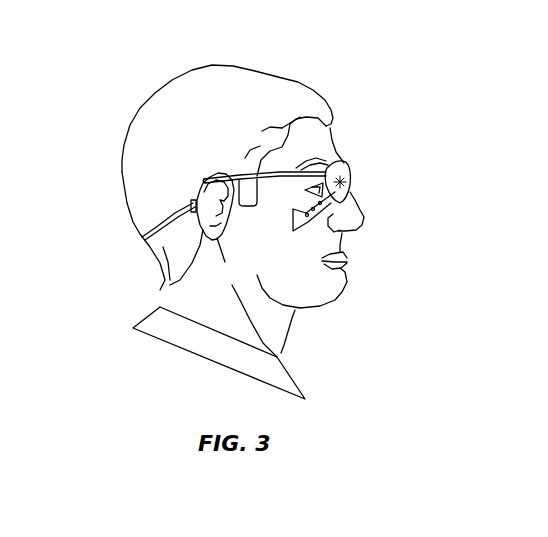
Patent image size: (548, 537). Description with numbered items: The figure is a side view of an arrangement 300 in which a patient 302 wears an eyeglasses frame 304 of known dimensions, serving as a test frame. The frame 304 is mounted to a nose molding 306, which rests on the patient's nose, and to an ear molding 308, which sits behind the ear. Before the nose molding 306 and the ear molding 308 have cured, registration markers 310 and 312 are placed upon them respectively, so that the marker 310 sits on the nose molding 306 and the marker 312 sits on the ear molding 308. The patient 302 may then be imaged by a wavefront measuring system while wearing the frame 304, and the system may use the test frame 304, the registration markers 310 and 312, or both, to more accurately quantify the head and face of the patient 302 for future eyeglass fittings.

The head-mounted display system 300 is at (306, 43).
The patient 302 is at (165, 110).
The eyeglasses frame 304 is at (353, 173).
The nose molding 306 is at (363, 217).
The ear molding 308 is at (174, 184).
The registration marker 310 is at (296, 226).
The registration marker 312 is at (129, 236).